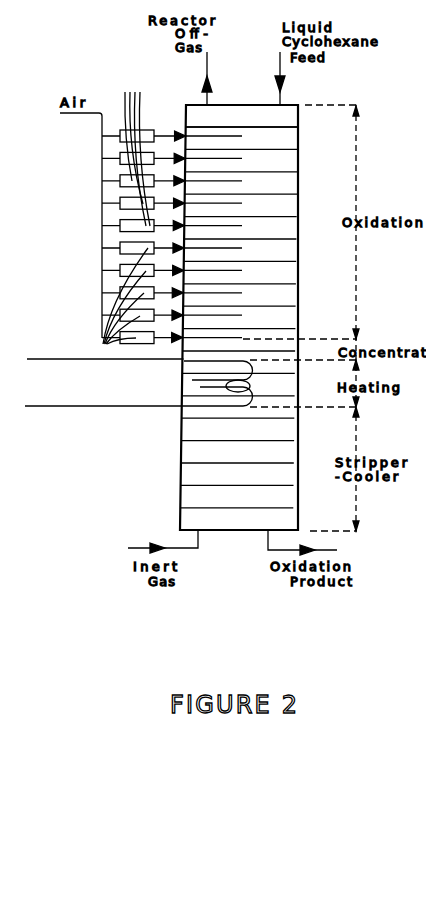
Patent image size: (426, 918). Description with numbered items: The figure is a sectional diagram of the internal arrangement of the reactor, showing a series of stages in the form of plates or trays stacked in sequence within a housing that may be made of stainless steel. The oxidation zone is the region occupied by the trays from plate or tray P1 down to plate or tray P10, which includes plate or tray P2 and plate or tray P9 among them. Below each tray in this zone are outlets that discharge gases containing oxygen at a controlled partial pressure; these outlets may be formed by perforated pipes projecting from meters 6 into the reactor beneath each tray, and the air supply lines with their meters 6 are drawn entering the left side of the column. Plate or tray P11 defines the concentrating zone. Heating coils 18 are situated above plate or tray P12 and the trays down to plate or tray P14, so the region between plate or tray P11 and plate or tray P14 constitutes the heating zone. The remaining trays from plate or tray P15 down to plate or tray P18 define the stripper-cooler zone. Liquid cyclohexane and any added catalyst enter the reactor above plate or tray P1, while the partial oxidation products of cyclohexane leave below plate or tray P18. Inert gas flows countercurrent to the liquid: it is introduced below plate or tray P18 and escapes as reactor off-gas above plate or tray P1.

The meters 6 is at (107, 349).
The heating coils 18 is at (185, 378).
The plate or tray P1 is at (276, 127).
The plate or tray P2 is at (276, 149).
The plate or tray P9 is at (274, 306).
The plate or tray P10 is at (274, 329).
The plate or tray P11 is at (274, 351).
The plate or tray P12 is at (274, 373).
The plate or tray P14 is at (272, 418).
The plate or tray P15 is at (272, 441).
The plate or tray P18 is at (272, 508).